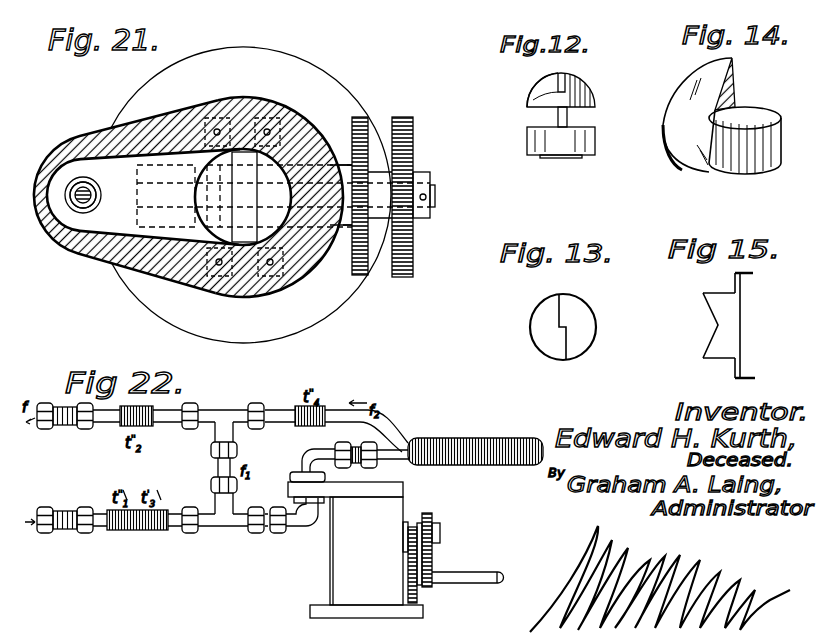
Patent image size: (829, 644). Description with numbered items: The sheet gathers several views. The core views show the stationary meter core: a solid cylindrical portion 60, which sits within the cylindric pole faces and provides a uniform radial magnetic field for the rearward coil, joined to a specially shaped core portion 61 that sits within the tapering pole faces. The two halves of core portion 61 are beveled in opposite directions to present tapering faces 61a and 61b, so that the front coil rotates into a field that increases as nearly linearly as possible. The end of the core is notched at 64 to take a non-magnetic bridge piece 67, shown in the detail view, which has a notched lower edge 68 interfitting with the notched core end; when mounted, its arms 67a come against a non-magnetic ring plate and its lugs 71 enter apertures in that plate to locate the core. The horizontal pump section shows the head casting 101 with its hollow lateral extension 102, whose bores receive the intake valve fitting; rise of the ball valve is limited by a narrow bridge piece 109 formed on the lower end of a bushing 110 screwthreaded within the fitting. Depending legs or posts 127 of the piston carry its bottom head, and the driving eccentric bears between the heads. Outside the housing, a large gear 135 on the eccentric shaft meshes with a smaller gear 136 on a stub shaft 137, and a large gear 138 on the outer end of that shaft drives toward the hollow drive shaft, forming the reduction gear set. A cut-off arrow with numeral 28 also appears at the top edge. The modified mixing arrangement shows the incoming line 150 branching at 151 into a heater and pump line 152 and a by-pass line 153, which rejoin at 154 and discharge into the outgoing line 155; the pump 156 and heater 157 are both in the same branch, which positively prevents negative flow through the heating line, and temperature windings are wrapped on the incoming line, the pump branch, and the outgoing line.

In FIG. 21, the arrow reference 28 is at (233, 4).
In FIG. 21, the head casting 101 is at (282, 108).
In FIG. 21, the hollow lateral extension 102 is at (98, 143).
In FIG. 21, the bridge piece 109 is at (82, 180).
In FIG. 21, the bushing 110 is at (80, 210).
In FIG. 21, the depending legs or posts 127 is at (230, 98).
In FIG. 21, the large gear 135 is at (360, 118).
In FIG. 21, the smaller gear 136 is at (362, 212).
In FIG. 21, the stub shaft 137 is at (436, 196).
In FIG. 21, the large gear 138 is at (406, 118).
In FIG. 12, the solid cylindrical core portion 60 is at (527, 143).
In FIG. 12, the core portion 61 is at (540, 84).
In FIG. 14, the core portion 61 is at (747, 170).
In FIG. 12, the tapering face 61a is at (530, 97).
In FIG. 14, the tapering face 61a is at (681, 114).
In FIG. 13, the tapering face 61a is at (542, 313).
In FIG. 14, the tapering face 61b is at (757, 118).
In FIG. 13, the tapering face 61b is at (592, 315).
In FIG. 12, the notch 64 is at (563, 73).
In FIG. 15, the non-magnetic bridge piece 67 is at (740, 310).
In FIG. 15, the arms 67a is at (733, 283).
In FIG. 15, the notched lower edge 68 is at (715, 325).
In FIG. 15, the lugs 71 is at (755, 276).
In FIG. 22, the incoming line 150 is at (100, 527).
In FIG. 22, the branch point 151 is at (222, 524).
In FIG. 22, the heater and pump line 152 is at (297, 522).
In FIG. 22, the by-pass line 153 is at (216, 468).
In FIG. 22, the juncture 154 is at (216, 415).
In FIG. 22, the outgoing line 155 is at (107, 419).
In FIG. 22, the pump 156 is at (396, 530).
In FIG. 22, the heater 157 is at (451, 440).